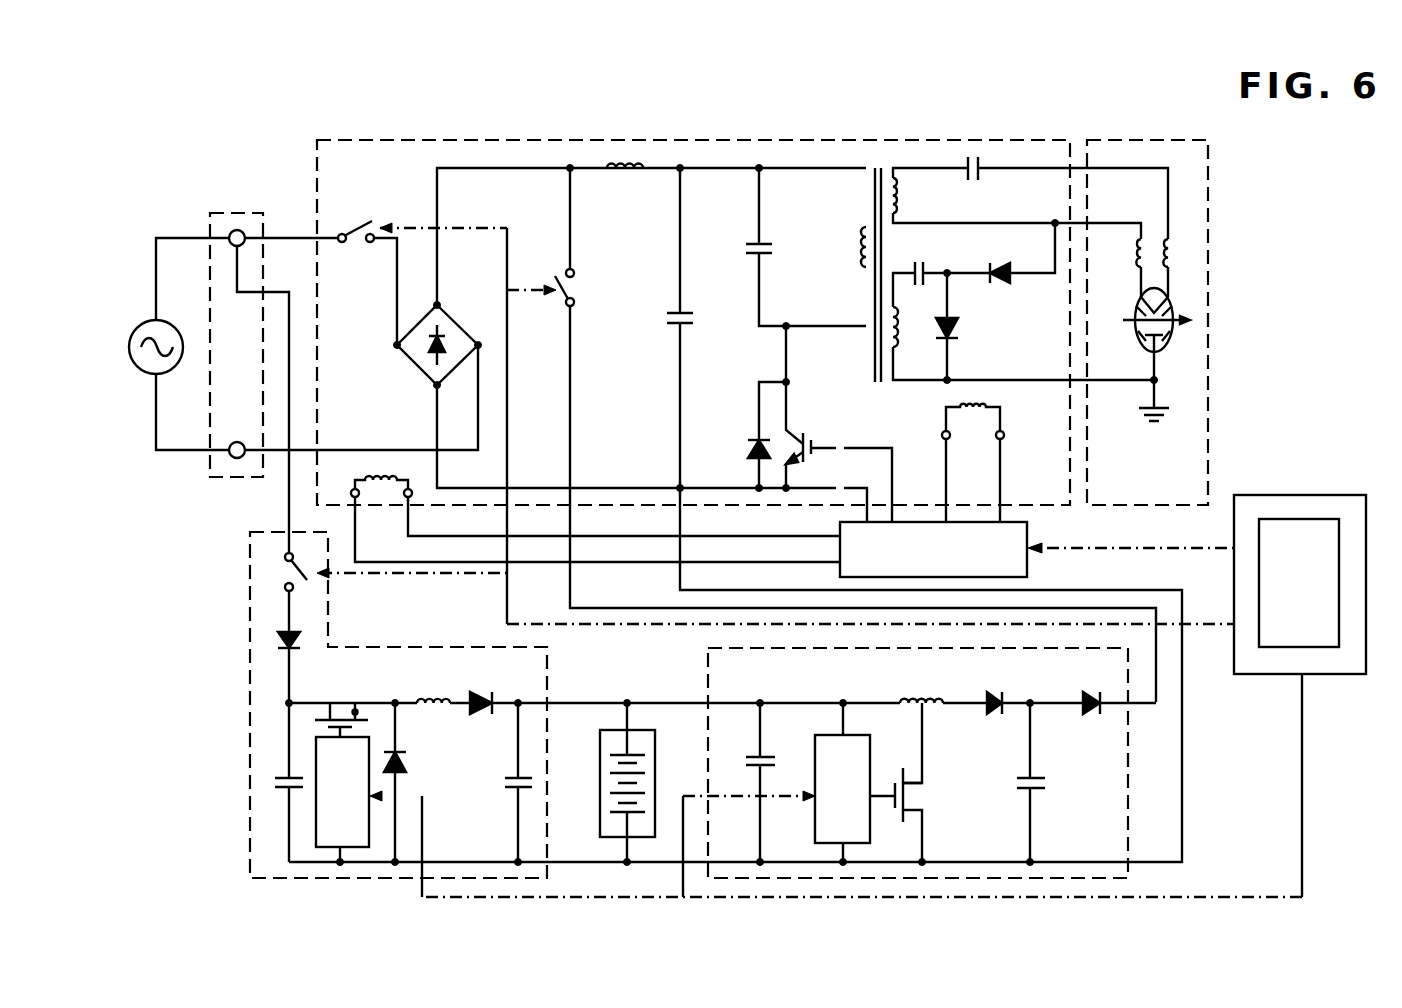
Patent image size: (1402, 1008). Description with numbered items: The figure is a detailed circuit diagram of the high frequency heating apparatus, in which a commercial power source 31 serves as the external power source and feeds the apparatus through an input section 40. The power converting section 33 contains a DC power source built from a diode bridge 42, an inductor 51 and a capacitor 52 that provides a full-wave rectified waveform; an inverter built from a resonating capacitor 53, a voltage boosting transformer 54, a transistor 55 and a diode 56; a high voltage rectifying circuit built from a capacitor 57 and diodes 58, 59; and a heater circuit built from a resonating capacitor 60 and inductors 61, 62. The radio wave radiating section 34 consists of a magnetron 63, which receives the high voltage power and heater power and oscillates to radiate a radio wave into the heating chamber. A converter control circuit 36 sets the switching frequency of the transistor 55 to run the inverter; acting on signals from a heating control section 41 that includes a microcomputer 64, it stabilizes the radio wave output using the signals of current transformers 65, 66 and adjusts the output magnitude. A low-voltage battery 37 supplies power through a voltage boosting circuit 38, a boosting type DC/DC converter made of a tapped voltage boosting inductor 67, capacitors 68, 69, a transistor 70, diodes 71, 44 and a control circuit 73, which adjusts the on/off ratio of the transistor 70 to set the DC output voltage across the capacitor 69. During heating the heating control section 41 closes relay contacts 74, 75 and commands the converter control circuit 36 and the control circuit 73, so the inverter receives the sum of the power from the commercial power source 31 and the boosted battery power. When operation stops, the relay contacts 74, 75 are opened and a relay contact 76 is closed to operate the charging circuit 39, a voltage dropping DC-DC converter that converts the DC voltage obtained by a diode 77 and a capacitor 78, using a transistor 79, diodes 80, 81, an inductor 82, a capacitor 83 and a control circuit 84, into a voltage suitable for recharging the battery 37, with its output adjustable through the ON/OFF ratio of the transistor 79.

The commercial power source 31 is at (165, 318).
The power converting section 33 is at (662, 309).
The radio wave radiating section 34 is at (1183, 319).
The converter control circuit 36 is at (969, 557).
The battery 37 is at (601, 783).
The voltage boosting circuit 38 is at (885, 758).
The charging circuit 39 is at (363, 709).
The input section 40 is at (236, 315).
The heating control section 41 is at (1300, 557).
The diode bridge 42 is at (445, 324).
The diode 44 is at (1099, 732).
The inductor 51 is at (629, 197).
The capacitor 52 is at (650, 336).
The resonating capacitor 53 is at (790, 251).
The voltage boosting transformer 54 is at (881, 236).
The transistor 55 is at (822, 435).
The diode 56 is at (726, 451).
The capacitor 57 is at (944, 252).
The diode 58 is at (978, 341).
The diode 59 is at (1025, 295).
The resonating capacitor 60 is at (999, 188).
The inductor 61 is at (1208, 256).
The inductor 62 is at (1118, 267).
The magnetron 63 is at (1141, 334).
The microcomputer 64 is at (1297, 548).
The current transformer 65 is at (371, 450).
The current transformer 66 is at (940, 421).
The voltage boosting inductor 67 is at (901, 676).
The capacitor 68 is at (778, 732).
The capacitor 69 is at (1060, 798).
The transistor 70 is at (941, 795).
The diode 71 is at (1002, 730).
The control circuit 73 is at (824, 797).
The relay contact 74 is at (362, 197).
The relay contact 75 is at (600, 287).
The relay contact 76 is at (253, 572).
The diode 77 is at (250, 637).
The capacitor 78 is at (251, 781).
The transistor 79 is at (341, 686).
The diode 80 is at (429, 770).
The diode 81 is at (494, 724).
The inductor 82 is at (448, 674).
The capacitor 83 is at (498, 808).
The control circuit 84 is at (289, 792).